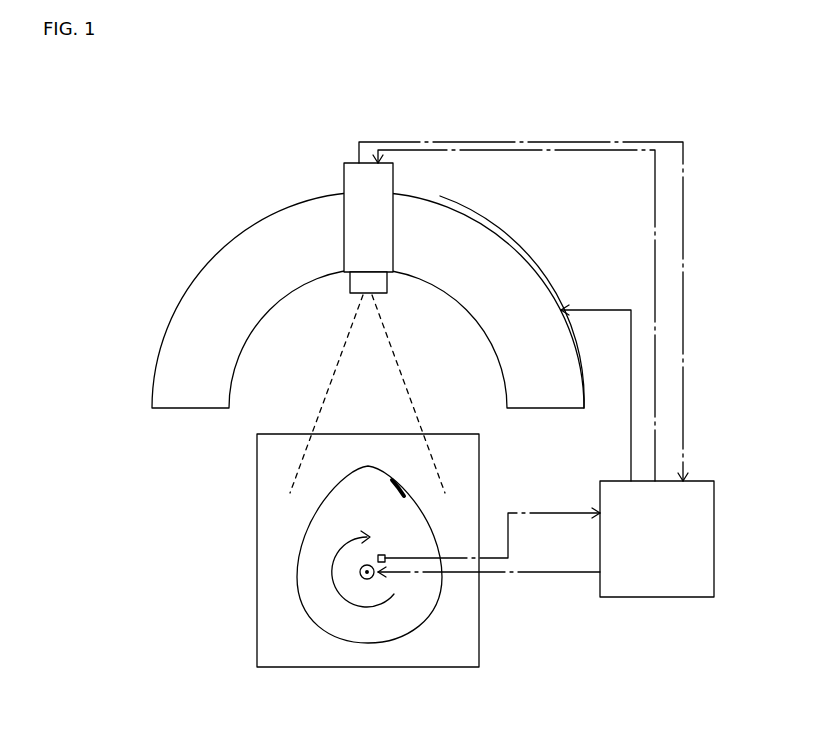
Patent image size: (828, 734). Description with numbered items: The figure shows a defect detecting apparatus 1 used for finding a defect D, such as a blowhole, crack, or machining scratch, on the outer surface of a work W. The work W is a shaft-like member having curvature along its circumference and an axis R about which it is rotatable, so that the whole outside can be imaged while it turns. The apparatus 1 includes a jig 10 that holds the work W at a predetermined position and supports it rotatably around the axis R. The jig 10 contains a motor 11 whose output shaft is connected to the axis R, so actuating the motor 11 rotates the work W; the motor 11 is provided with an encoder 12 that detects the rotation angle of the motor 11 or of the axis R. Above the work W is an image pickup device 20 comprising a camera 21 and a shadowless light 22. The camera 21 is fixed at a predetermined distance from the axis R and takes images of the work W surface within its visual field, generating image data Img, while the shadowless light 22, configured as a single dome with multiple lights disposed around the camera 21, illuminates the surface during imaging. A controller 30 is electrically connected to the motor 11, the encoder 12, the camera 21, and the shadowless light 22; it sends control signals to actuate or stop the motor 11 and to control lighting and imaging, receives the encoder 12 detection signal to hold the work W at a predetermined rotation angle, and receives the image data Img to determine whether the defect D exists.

The defect detecting apparatus 1 is at (426, 393).
The jig 10 is at (237, 553).
The motor 11 is at (368, 565).
The encoder 12 is at (386, 556).
The image pickup device 20 is at (305, 190).
The camera 21 is at (385, 230).
The shadowless light 22 is at (465, 257).
The controller 30 is at (669, 551).
The defect D is at (399, 487).
The axis R is at (375, 578).
The work W is at (395, 628).
The image data Img is at (709, 452).